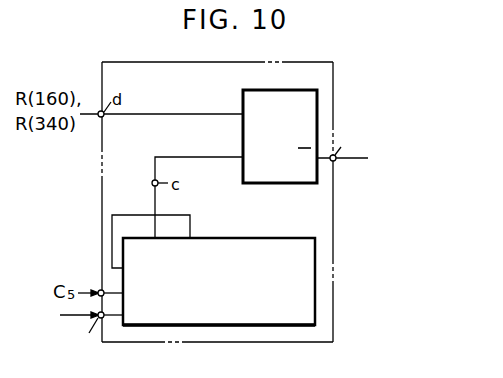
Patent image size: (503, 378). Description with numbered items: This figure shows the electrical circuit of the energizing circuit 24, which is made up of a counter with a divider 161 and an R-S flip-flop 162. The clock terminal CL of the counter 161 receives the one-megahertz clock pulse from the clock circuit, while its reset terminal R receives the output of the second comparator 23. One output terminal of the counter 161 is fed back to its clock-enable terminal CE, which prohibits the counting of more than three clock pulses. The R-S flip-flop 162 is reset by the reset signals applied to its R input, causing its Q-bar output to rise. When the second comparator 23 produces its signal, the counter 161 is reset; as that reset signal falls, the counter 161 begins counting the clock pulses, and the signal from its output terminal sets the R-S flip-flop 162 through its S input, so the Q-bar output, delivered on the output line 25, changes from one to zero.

The energizing circuit 24 is at (297, 62).
The R-S flip-flop 162 is at (243, 100).
The output line 25 is at (357, 151).
The counter with a divider 161 is at (315, 293).
The second comparator 23 is at (77, 328).